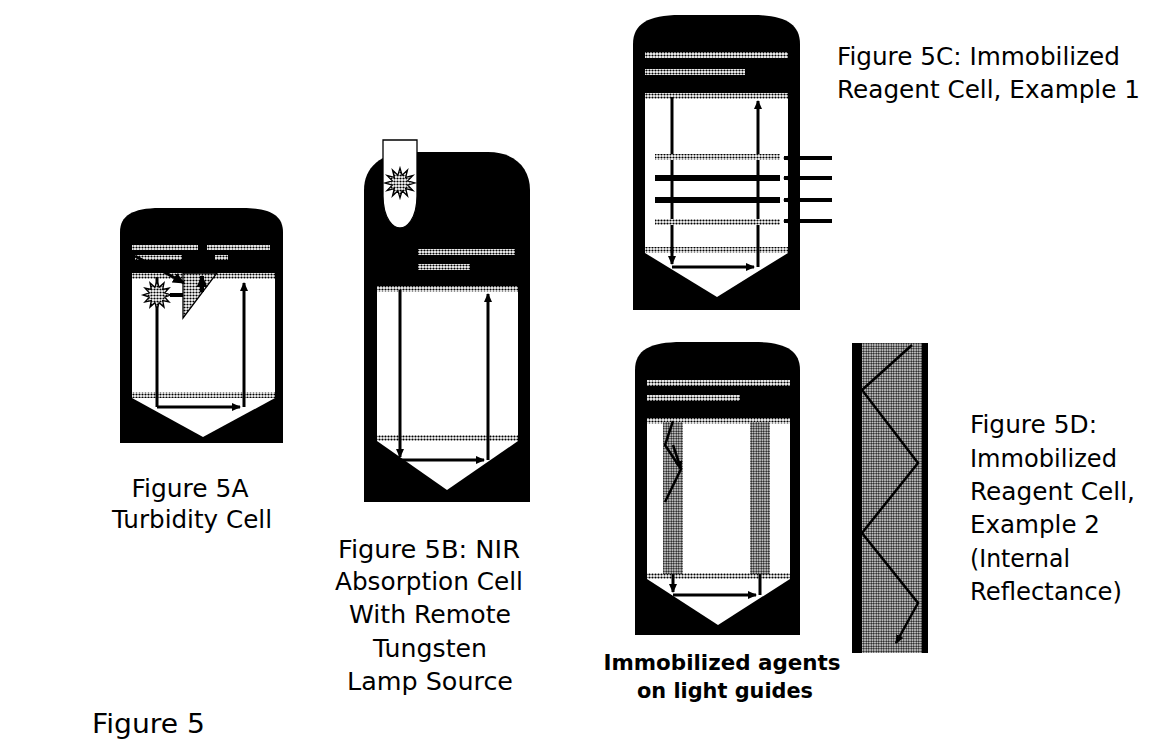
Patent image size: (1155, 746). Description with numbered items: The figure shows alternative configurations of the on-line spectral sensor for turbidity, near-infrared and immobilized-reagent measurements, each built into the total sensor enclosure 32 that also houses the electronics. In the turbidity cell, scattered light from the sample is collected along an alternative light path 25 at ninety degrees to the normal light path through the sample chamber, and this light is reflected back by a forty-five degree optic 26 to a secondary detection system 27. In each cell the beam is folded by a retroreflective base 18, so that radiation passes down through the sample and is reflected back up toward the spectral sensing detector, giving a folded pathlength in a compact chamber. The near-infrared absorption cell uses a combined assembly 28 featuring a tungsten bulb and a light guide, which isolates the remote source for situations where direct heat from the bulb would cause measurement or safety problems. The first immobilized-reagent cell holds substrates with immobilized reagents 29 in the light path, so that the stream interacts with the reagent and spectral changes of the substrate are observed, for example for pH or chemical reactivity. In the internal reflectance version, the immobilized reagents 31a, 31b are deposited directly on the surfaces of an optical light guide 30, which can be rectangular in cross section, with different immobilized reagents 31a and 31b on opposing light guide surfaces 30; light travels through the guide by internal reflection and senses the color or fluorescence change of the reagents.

In FIG. 5A, the retroreflective base 18 is at (147, 427).
In FIG. 5B, the retroreflective base 18 is at (364, 476).
In FIG. 5C, the retroreflective base 18 is at (797, 287).
In FIG. 5D, the retroreflective base 18 is at (640, 605).
In FIG. 5A, the alternative light path 25 is at (122, 250).
In FIG. 5A, the 45 degree optic 26 is at (215, 293).
In FIG. 5A, the secondary detection system 27 is at (219, 212).
In FIG. 5B, the combined assembly 28 is at (367, 212).
In FIG. 5C, the substrates with immobilized reagents 29 is at (969, 155).
In FIG. 5D, the optical light guide 30 is at (660, 533).
In FIG. 5D, the immobilized reagent 31a is at (861, 659).
In FIG. 5D, the immobilized reagent 31b is at (932, 370).
In FIG. 5A, the total sensor enclosure 32 is at (289, 365).
In FIG. 5B, the total sensor enclosure 32 is at (630, 232).
In FIG. 5C, the total sensor enclosure 32 is at (716, 162).
In FIG. 5D, the total sensor enclosure 32 is at (907, 338).